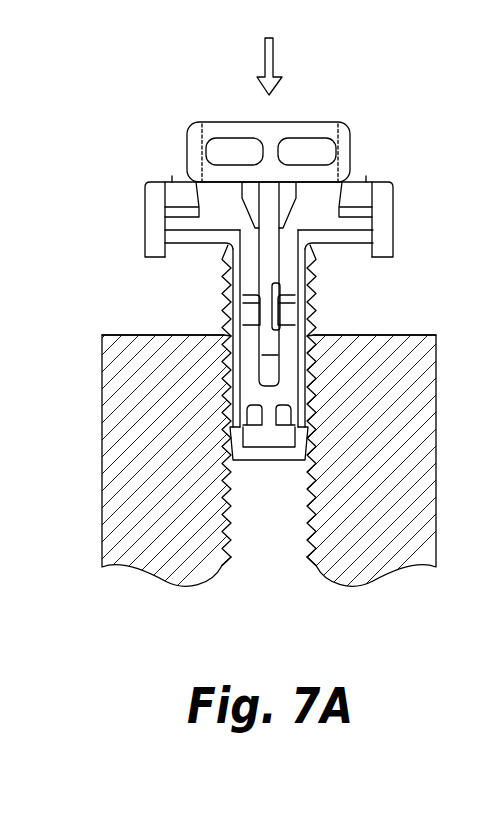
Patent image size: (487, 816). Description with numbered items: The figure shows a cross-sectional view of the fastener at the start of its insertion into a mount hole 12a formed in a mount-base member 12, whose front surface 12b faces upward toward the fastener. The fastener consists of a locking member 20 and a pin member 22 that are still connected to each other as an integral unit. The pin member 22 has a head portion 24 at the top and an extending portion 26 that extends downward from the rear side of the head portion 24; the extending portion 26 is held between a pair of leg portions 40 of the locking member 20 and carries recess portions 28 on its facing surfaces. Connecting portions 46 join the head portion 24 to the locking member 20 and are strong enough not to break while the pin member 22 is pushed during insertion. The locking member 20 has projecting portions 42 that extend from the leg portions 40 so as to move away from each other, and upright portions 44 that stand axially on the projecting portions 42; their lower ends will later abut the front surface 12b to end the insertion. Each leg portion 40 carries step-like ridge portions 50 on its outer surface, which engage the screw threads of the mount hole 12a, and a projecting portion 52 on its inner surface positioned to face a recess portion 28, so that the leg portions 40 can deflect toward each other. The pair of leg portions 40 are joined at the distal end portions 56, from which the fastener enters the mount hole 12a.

The mount-base member 12 is at (368, 560).
The mount hole 12a is at (242, 545).
The front surface 12b is at (170, 335).
The locking member 20 is at (144, 177).
The pin member 22 is at (231, 116).
The head portion 24 is at (292, 121).
The extending portion 26 is at (275, 262).
The recess portions 28 is at (281, 331).
The leg portions 40 is at (228, 370).
The projecting portions 42 is at (190, 237).
The upright portions 44 is at (144, 207).
The connecting portions 46 is at (174, 180).
The ridge portions 50 is at (226, 308).
The projecting portion 52 is at (250, 299).
The distal end portions 56 is at (270, 462).